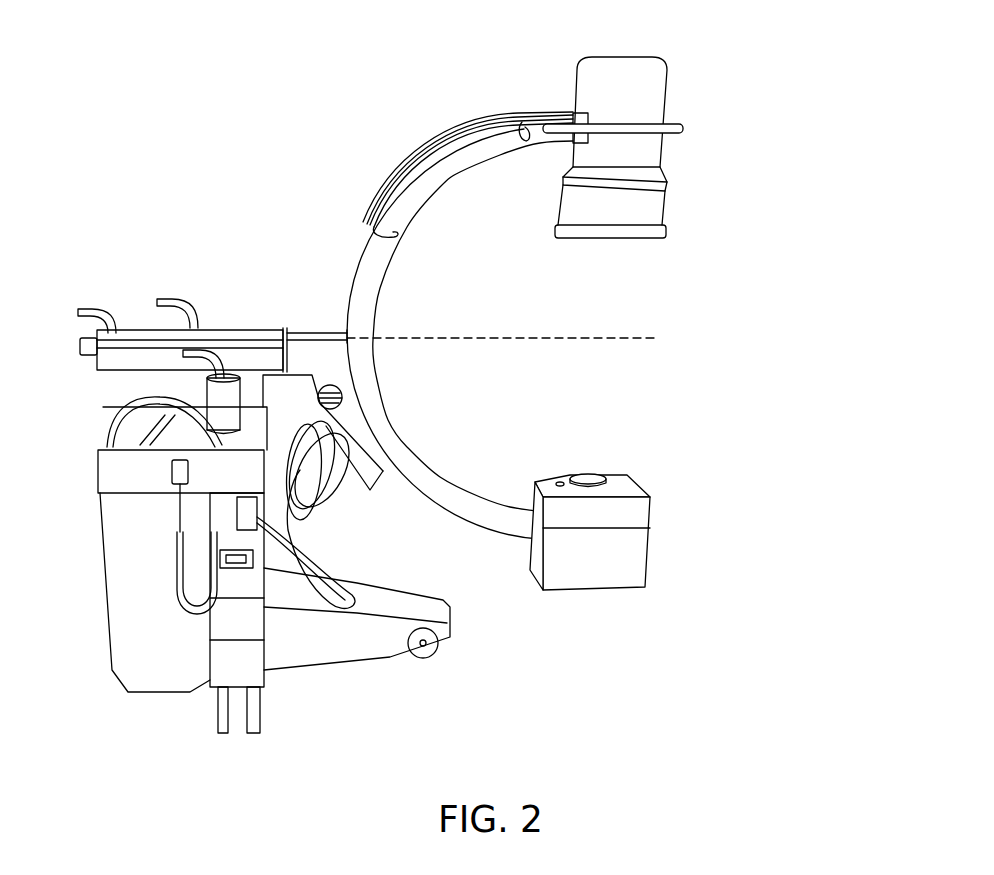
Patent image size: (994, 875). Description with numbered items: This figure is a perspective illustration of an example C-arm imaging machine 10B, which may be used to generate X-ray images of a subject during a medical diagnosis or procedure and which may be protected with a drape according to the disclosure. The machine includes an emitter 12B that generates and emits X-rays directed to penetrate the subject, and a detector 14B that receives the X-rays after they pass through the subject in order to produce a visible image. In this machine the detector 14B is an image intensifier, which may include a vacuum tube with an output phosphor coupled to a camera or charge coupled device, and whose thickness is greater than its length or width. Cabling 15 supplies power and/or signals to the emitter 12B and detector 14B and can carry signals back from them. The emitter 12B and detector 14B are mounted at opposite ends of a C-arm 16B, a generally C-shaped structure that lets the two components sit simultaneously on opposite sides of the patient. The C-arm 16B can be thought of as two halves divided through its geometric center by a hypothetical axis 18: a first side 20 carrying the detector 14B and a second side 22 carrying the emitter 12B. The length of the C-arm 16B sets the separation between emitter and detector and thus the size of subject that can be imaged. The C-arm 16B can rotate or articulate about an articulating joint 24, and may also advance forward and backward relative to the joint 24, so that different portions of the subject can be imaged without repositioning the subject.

The C-arm imaging machine 10B is at (812, 165).
The emitter 12B is at (664, 532).
The detector 14B is at (692, 82).
The cabling 15 is at (293, 478).
The C-arm 16B is at (395, 396).
The hypothetical axis 18 is at (630, 336).
The first side 20 is at (337, 241).
The second side 22 is at (426, 500).
The articulating joint 24 is at (347, 335).